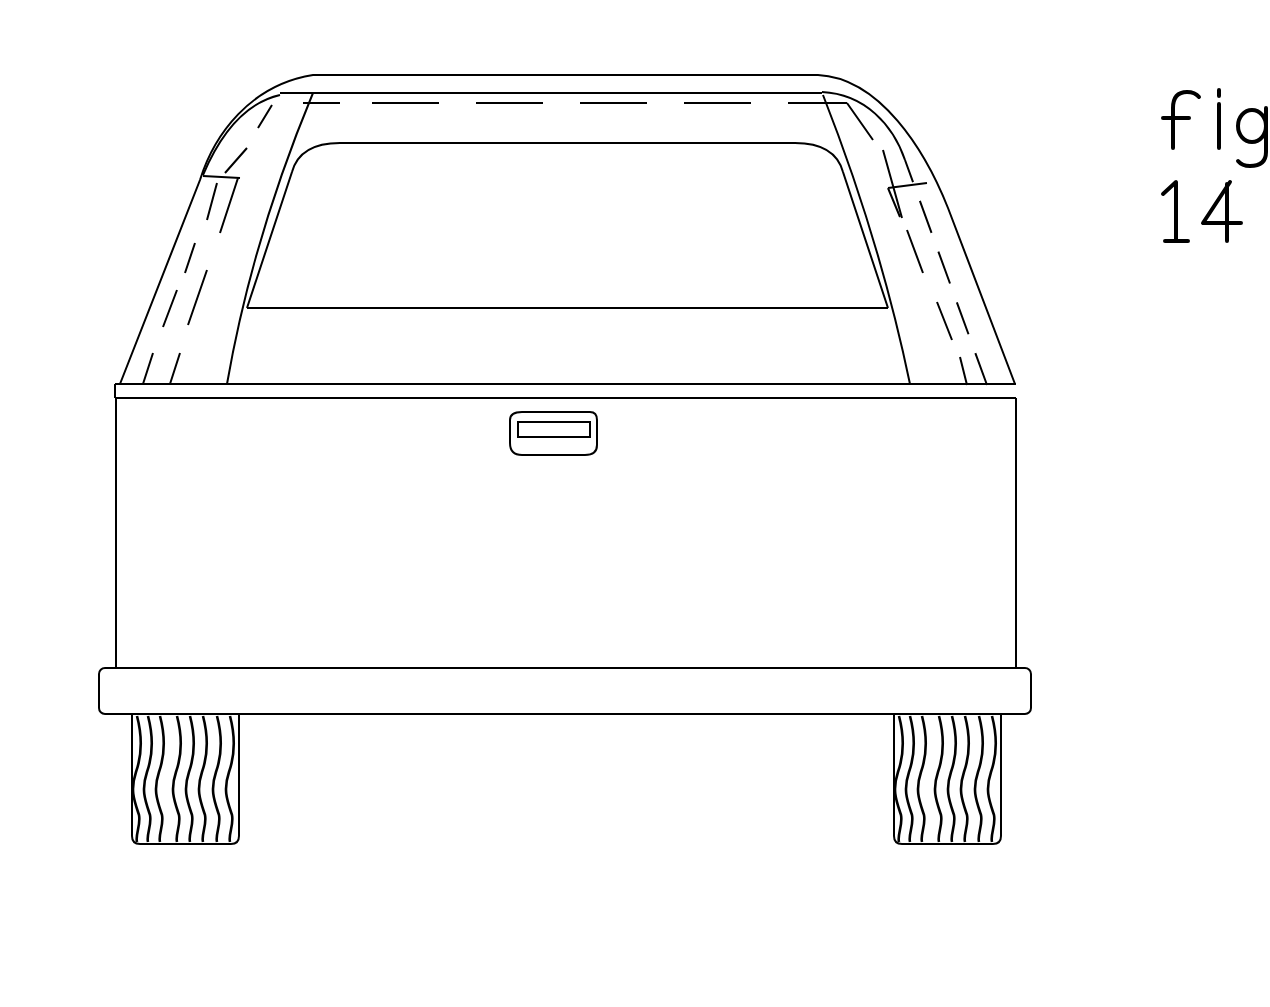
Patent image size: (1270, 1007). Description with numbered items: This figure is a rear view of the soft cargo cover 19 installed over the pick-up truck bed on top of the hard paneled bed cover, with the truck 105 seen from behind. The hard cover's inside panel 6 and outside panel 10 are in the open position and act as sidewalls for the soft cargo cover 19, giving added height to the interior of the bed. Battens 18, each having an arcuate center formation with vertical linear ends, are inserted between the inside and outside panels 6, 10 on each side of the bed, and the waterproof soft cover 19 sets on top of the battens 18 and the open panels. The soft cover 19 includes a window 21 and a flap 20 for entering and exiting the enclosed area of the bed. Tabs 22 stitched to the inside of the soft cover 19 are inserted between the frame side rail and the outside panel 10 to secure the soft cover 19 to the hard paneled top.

The pickup truck 105 is at (567, 562).
The outside panel 10 is at (977, 317).
The batten 18 is at (450, 102).
The tab 22 is at (825, 77).
The inside panel 6 is at (920, 230).
The soft cargo cover 19 is at (888, 138).
The window 21 is at (433, 296).
The flap 20 is at (782, 350).